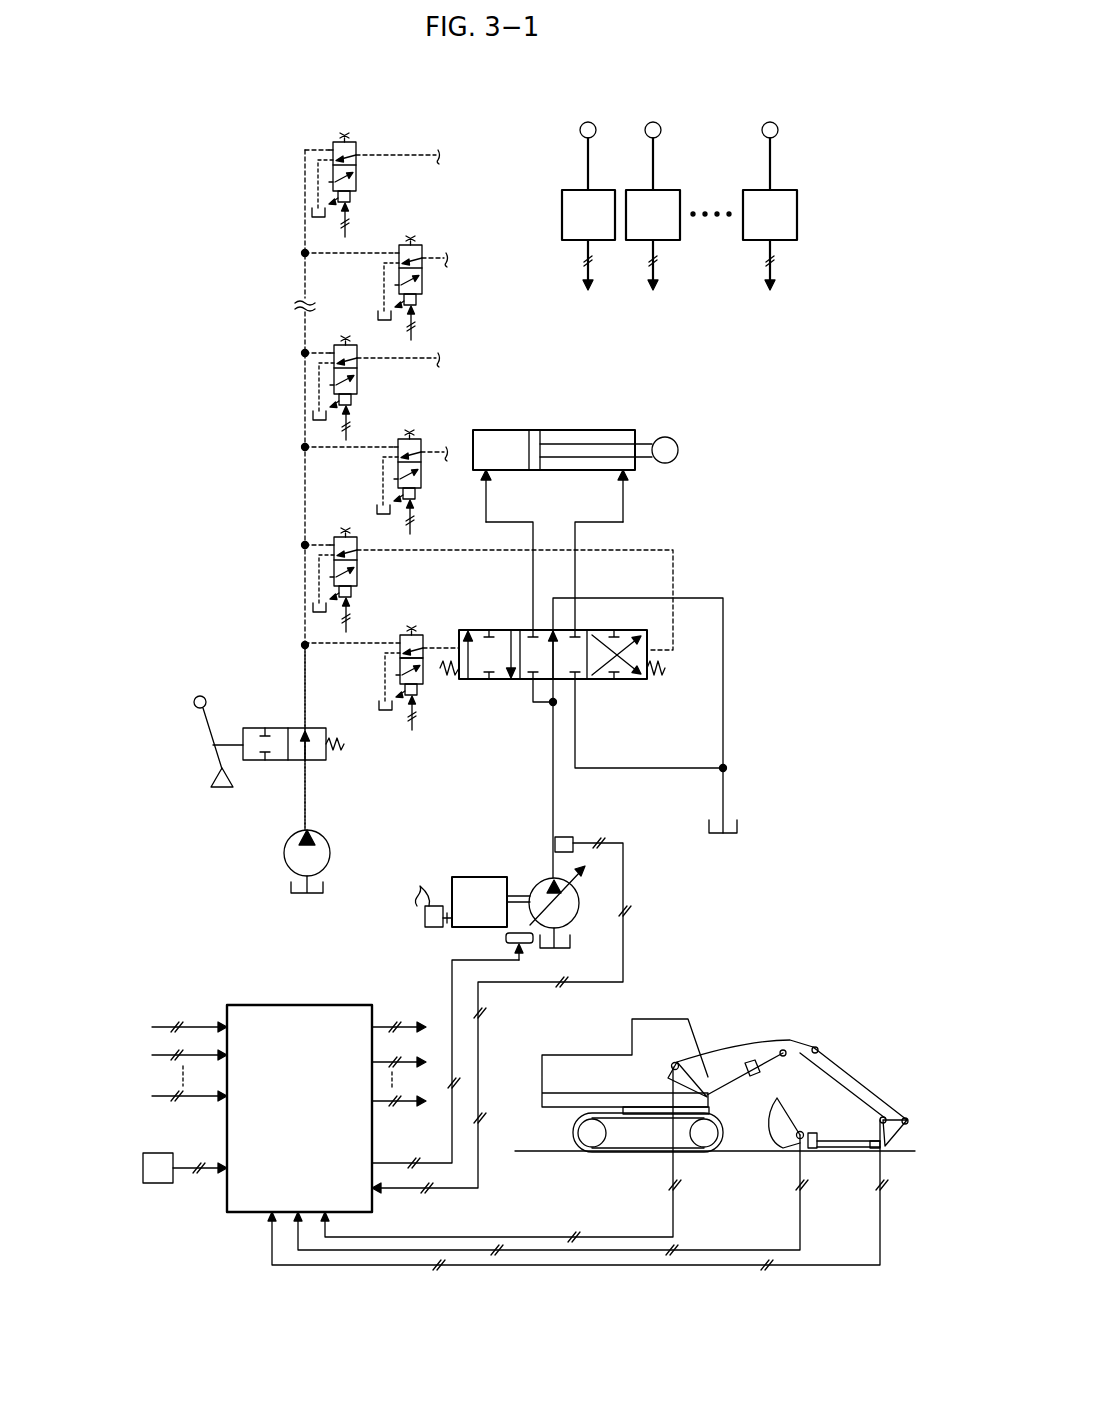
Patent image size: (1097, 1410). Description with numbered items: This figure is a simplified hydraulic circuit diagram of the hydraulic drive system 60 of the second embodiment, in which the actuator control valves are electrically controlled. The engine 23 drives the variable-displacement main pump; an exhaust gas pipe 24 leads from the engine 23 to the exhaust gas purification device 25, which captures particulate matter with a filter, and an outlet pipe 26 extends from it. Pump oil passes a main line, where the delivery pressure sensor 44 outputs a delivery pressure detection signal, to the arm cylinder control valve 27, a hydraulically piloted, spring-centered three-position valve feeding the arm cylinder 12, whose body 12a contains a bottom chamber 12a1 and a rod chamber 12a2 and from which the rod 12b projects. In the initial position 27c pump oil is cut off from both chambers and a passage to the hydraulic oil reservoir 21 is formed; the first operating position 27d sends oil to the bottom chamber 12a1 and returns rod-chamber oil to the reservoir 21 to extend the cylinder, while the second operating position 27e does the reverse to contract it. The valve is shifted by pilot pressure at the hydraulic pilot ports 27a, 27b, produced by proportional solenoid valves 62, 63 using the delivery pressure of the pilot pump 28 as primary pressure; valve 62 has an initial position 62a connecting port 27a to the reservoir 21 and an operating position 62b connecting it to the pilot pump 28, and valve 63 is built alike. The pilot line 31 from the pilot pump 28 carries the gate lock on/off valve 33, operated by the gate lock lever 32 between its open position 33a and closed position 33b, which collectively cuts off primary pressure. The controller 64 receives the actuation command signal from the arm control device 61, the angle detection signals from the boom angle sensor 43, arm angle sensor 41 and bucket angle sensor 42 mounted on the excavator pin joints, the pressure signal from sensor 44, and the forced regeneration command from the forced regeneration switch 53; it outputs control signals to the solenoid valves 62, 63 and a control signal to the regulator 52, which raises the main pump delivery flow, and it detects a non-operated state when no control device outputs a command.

The arm cylinder 12 is at (635, 430).
The cylinder body 12a is at (475, 430).
The bottom chamber 12a1 is at (510, 440).
The rod chamber 12a2 is at (585, 436).
The piston rod 12b is at (679, 452).
The hydraulic oil reservoir 21 is at (735, 836).
The engine 23 is at (486, 877).
The exhaust gas pipe 24 is at (446, 929).
The exhaust gas purification device 25 is at (423, 921).
The outlet pipe 26 is at (421, 889).
The arm cylinder control valve 27 is at (518, 630).
The hydraulic pilot port 27a is at (456, 648).
The hydraulic pilot port 27b is at (650, 651).
The initial position 27c is at (583, 681).
The first operating position 27d is at (497, 681).
The second operating position 27e is at (630, 681).
The pilot pump 28 is at (285, 858).
The pilot line 31 is at (300, 648).
The gate lock lever 32 is at (195, 697).
The gate lock on/off valve 33 is at (253, 762).
The open position 33a is at (295, 725).
The closed position 33b is at (252, 726).
The arm angle sensor 41 is at (885, 1116).
The bucket angle sensor 42 is at (808, 1128).
The boom angle sensor 43 is at (690, 1040).
The delivery pressure sensor 44 is at (573, 838).
The regulator 52 is at (522, 948).
The forced regeneration switch 53 is at (146, 1152).
The hydraulic drive system 60 is at (292, 132).
The arm control device 61 is at (578, 123).
The proportional solenoid valve 62 is at (405, 698).
The initial position 62a is at (399, 619).
The operating position 62b is at (443, 697).
The proportional solenoid valve 63 is at (337, 538).
The controller 64 is at (275, 1004).